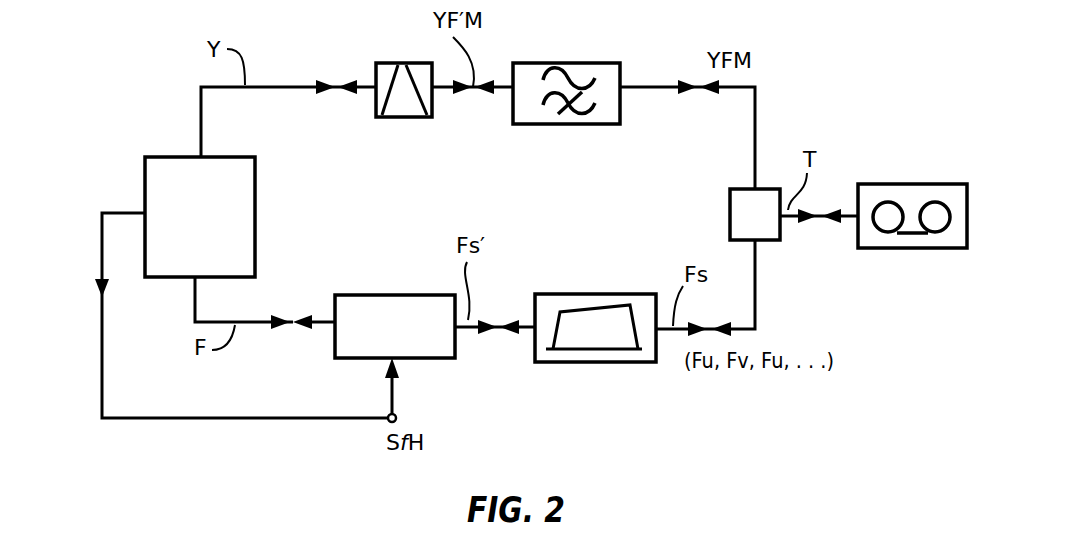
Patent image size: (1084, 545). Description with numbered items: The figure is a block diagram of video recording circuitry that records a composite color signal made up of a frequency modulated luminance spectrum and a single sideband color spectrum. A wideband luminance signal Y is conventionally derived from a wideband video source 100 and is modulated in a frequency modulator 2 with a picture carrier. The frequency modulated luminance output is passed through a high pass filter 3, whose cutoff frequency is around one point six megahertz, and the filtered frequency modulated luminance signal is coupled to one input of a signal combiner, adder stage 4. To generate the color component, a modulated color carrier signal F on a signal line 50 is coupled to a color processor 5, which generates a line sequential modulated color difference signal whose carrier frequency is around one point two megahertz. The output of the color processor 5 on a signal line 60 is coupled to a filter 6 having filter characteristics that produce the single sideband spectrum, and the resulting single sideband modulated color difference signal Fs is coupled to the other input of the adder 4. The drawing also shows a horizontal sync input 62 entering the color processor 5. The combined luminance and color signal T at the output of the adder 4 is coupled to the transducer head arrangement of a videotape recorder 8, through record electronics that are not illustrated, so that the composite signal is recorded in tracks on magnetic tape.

The frequency modulator 2 is at (404, 72).
The high pass filter 3 is at (566, 75).
The adder stage 4 is at (741, 214).
The color processor 5 is at (395, 309).
The SSB modulator 6 is at (595, 311).
The videotape recorder 8 is at (912, 198).
The wideband video source 100 is at (255, 183).
The signal line 50 is at (320, 320).
The signal line 60 is at (527, 323).
The horizontal sync input line 62 is at (392, 398).